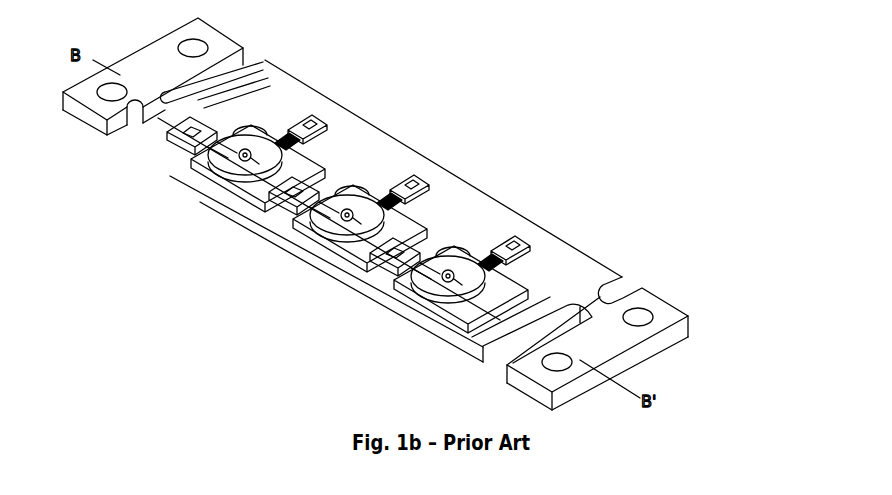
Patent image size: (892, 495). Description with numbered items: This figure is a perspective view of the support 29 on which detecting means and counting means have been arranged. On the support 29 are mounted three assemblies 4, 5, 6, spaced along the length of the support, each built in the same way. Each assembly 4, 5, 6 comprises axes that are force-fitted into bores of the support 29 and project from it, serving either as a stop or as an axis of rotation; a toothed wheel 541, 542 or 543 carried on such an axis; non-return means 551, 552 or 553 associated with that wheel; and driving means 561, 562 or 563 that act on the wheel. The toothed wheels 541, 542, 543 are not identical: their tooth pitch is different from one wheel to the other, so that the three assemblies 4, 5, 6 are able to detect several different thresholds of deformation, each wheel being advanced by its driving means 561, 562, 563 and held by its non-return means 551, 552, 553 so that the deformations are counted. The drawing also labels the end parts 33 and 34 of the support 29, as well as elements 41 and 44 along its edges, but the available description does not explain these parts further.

The support 29 is at (367, 211).
The left mounting bracket 33 is at (127, 63).
The right mounting bracket 34 is at (635, 340).
The near rail of frame 41 is at (177, 173).
The far rail of frame 44 is at (406, 153).
The assembly 4 is at (233, 157).
The assembly 5 is at (334, 226).
The assembly 6 is at (436, 294).
The toothed wheel 541 is at (220, 175).
The toothed wheel 542 is at (320, 236).
The toothed wheel 543 is at (410, 298).
The non-return means 551 is at (182, 141).
The non-return means 552 is at (284, 185).
The non-return means 553 is at (382, 249).
The driving means 561 is at (294, 120).
The driving means 562 is at (391, 177).
The driving means 563 is at (495, 242).